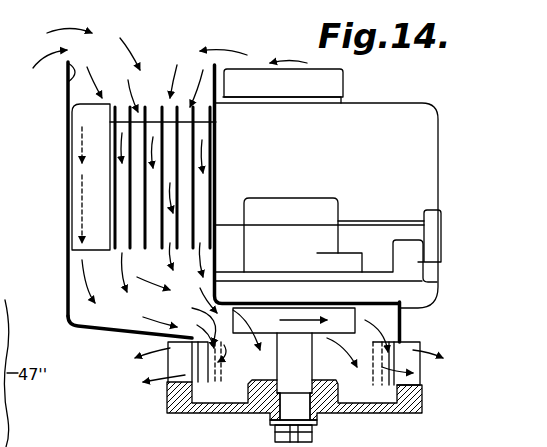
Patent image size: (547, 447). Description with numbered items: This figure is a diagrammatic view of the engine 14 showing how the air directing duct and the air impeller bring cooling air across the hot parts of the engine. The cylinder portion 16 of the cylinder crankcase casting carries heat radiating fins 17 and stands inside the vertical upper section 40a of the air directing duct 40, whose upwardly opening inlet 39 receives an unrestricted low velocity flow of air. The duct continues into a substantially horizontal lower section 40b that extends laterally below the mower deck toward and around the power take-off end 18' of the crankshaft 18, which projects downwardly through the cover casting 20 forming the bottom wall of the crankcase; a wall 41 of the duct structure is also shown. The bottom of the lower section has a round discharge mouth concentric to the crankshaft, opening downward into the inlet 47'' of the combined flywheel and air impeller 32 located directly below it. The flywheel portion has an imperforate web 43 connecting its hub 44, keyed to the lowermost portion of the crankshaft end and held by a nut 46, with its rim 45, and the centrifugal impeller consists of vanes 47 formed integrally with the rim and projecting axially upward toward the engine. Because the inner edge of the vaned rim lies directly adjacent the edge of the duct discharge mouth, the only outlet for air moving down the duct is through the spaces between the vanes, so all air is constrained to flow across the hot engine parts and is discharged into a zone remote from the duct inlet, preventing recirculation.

The engine 14 is at (386, 100).
The cylinder portion 16 is at (202, 133).
The heat radiating fins 17 is at (180, 200).
The crankshaft 18 is at (294, 350).
The power take-off end of the crankshaft 18' is at (317, 418).
The cover casting 20 is at (377, 243).
The combined flywheel and air impeller 32 is at (160, 407).
The inlet of the air directing duct 39 is at (68, 80).
The air directing duct 40 is at (203, 213).
The vertical upper section of the duct 40a is at (66, 132).
The horizontal lower section of the duct 40b is at (115, 333).
The shroud rear wall 41 is at (403, 330).
The web 43 is at (387, 412).
The hub 44 is at (340, 395).
The rim 45 is at (423, 402).
The nut 46 is at (275, 432).
The vanes 47 is at (283, 363).
The inlet of the air impeller 47'' is at (196, 329).